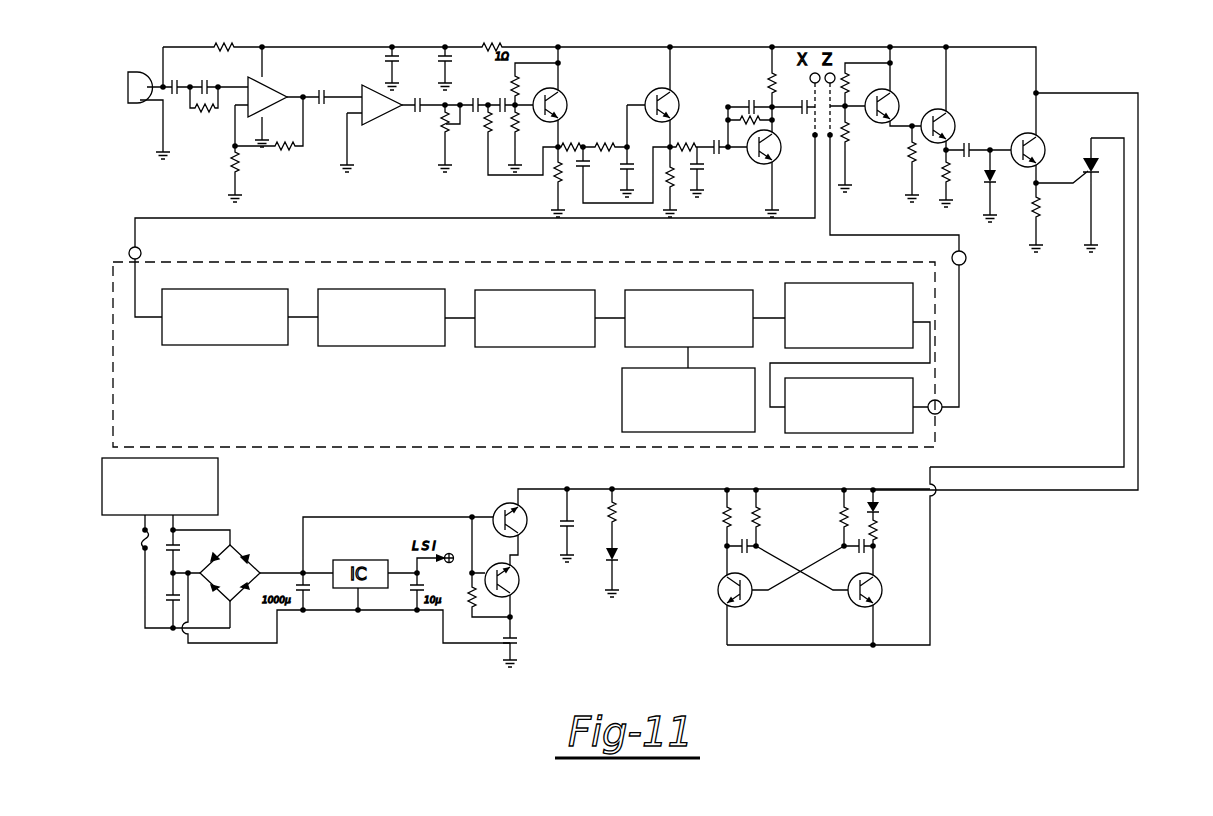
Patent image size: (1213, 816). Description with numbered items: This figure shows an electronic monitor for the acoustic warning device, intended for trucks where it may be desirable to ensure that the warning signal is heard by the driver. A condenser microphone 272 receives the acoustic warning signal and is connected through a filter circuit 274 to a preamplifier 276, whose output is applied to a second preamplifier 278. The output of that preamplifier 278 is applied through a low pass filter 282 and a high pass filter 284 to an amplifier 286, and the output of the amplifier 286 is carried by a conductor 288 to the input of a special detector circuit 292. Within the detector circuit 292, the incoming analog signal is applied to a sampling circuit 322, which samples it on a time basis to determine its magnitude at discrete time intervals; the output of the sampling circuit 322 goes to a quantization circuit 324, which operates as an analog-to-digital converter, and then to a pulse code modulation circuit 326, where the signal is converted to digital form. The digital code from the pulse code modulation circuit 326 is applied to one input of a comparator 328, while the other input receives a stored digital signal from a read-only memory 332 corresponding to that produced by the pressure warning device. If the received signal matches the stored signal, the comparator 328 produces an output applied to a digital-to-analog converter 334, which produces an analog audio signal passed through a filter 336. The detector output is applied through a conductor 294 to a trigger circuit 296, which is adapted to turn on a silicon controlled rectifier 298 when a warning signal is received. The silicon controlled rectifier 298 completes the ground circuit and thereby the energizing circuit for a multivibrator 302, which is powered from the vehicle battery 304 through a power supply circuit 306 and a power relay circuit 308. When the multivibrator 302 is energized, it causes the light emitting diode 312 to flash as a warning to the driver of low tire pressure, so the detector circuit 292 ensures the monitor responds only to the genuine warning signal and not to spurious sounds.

The condenser microphone 272 is at (132, 68).
The filter circuit 274 is at (241, 59).
The preamplifier 276 is at (268, 82).
The preamplifier 278 is at (367, 80).
The low pass filter 282 is at (582, 99).
The high pass filter 284 is at (680, 61).
The amplifier 286 is at (780, 66).
The conductor 288 is at (322, 217).
The special detector circuit 292 is at (330, 262).
The conductor 294 is at (963, 312).
The trigger circuit 296 is at (970, 70).
The SCR 298 is at (1113, 152).
The multivibrator 302 is at (792, 508).
The vehicle battery 304 is at (218, 496).
The power supply circuit 306 is at (285, 526).
The power relay circuit 308 is at (463, 509).
The LED 312 is at (878, 501).
The sampling circuit 322 is at (222, 289).
The quantization circuit 324 is at (360, 289).
The pulse code modulation circuit 326 is at (522, 290).
The comparator 328 is at (642, 290).
The read-only memory 332 is at (626, 364).
The digital-to-analog converter 334 is at (806, 283).
The filter 336 is at (915, 393).